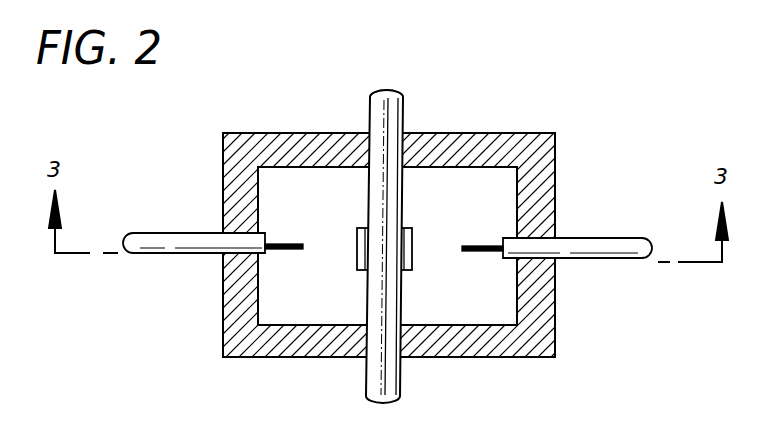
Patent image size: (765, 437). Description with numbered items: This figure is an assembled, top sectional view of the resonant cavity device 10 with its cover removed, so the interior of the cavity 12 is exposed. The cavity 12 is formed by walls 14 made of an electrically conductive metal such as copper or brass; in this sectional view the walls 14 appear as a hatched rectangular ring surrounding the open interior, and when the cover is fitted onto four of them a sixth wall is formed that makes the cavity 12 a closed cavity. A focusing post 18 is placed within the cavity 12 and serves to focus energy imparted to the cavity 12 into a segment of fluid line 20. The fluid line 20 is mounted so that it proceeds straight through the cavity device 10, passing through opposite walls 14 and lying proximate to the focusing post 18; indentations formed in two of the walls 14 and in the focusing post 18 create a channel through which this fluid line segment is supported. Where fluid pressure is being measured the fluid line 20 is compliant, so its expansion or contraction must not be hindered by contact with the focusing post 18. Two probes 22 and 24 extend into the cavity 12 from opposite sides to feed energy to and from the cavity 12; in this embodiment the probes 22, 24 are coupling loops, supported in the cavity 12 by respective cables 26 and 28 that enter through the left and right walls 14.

The resonant cavity device 10 is at (557, 105).
The cavity 12 is at (282, 185).
The walls 14 is at (553, 182).
The focusing post 18 is at (412, 250).
The fluid line 20 is at (406, 118).
The probe 22 is at (293, 243).
The probe 24 is at (477, 242).
The cable 26 is at (150, 233).
The cable 28 is at (598, 238).